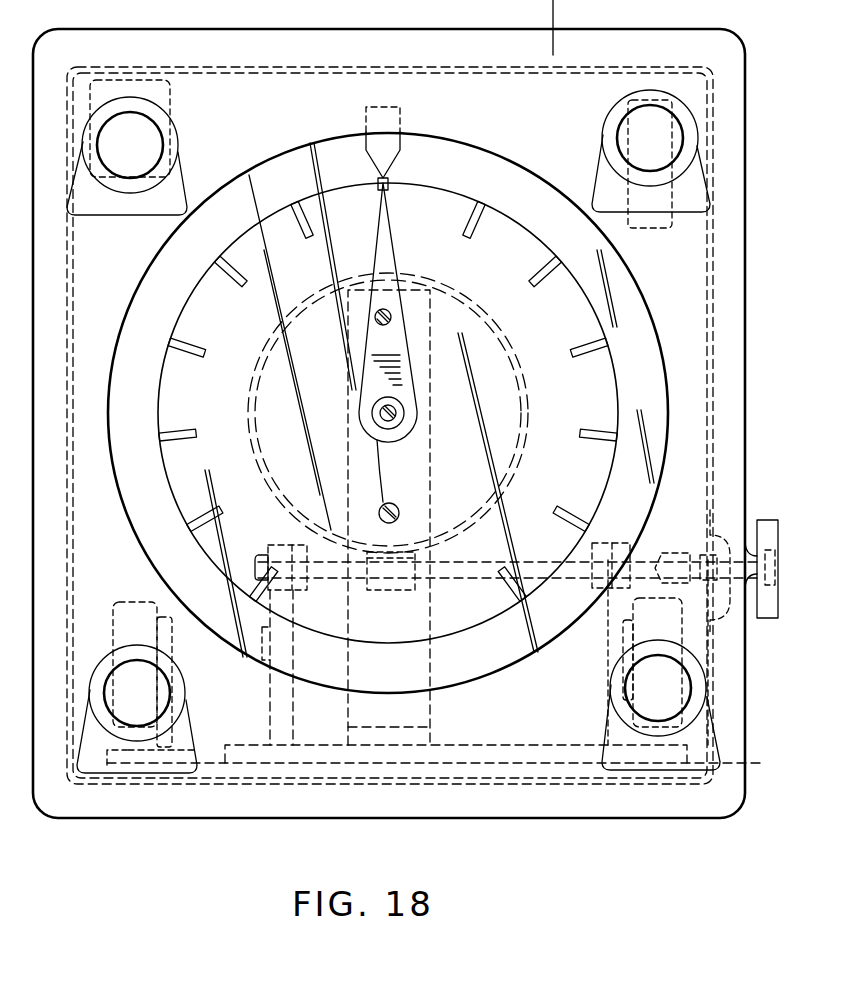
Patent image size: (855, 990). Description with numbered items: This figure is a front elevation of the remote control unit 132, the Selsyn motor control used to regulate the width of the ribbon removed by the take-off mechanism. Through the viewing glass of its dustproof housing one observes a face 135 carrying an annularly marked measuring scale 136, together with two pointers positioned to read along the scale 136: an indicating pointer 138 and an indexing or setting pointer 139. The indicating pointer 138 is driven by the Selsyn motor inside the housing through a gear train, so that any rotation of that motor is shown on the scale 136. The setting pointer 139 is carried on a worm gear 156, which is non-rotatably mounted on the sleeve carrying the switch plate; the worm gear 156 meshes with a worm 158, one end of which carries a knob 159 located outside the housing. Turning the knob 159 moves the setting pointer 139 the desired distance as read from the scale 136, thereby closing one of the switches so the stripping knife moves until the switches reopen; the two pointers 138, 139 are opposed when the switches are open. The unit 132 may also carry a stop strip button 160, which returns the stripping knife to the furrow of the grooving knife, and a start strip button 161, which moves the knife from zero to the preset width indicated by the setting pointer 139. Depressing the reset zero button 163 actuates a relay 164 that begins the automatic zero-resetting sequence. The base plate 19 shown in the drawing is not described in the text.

The base plate 19 is at (572, 755).
The remote control unit 132 is at (156, 848).
The face 135 is at (568, 322).
The measuring scale 136 is at (558, 542).
The indicating pointer 138 is at (385, 254).
The setting pointer 139 is at (390, 152).
The worm gear 156 is at (265, 405).
The worm 158 is at (403, 583).
The knob 159 is at (776, 620).
The stop strip button 160 is at (674, 702).
The start strip button 161 is at (152, 702).
The reset zero button 163 is at (146, 141).
The relay 164 is at (172, 90).